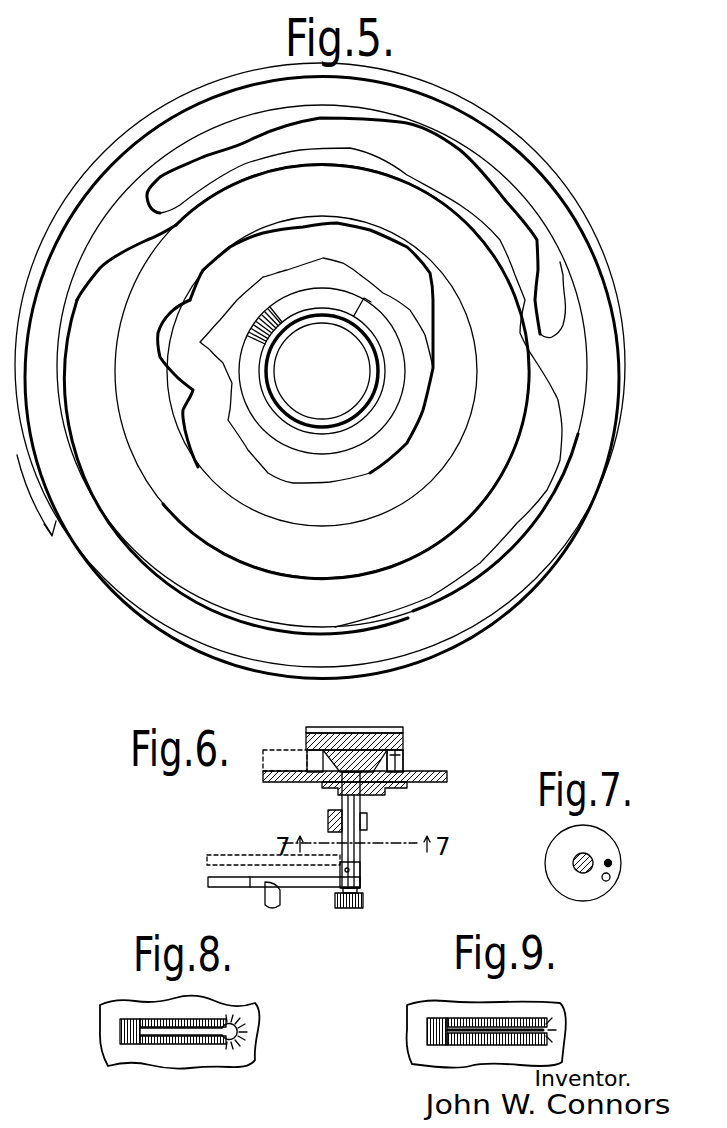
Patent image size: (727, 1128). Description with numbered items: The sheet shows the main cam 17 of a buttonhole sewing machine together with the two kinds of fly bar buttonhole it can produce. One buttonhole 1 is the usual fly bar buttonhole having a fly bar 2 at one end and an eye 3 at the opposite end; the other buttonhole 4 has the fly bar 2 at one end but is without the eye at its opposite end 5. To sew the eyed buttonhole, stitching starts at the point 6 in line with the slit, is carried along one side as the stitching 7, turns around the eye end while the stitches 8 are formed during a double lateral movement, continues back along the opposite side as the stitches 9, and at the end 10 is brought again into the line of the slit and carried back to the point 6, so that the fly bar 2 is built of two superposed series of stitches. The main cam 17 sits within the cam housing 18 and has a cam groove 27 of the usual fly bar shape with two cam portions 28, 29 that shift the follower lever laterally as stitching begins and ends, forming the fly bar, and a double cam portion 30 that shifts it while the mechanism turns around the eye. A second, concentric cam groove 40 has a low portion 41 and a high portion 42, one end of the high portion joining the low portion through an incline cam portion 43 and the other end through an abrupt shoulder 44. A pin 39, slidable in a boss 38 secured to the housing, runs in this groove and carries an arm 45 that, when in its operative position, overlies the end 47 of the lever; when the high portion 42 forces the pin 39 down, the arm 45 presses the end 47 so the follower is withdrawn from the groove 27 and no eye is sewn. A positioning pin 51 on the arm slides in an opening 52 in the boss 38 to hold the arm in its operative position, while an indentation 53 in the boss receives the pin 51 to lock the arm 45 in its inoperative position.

In FIG. 5, the main cam 17 is at (586, 386).
In FIG. 6, the main cam 17 is at (402, 760).
In FIG. 6, the cam housing 18 is at (447, 774).
In FIG. 5, the cam groove 27 is at (405, 477).
In FIG. 5, the cam portion 28 is at (288, 500).
In FIG. 5, the cam portion 29 is at (305, 240).
In FIG. 5, the double cam portion 30 is at (192, 377).
In FIG. 6, the boss 38 is at (328, 818).
In FIG. 7, the boss 38 is at (605, 843).
In FIG. 6, the pin 39 is at (347, 850).
In FIG. 7, the pin 39 is at (578, 868).
In FIG. 5, the cam groove 40 is at (390, 396).
In FIG. 6, the cam groove 40 is at (398, 763).
In FIG. 5, the low portion 41 is at (253, 375).
In FIG. 6, the low portion 41 is at (306, 740).
In FIG. 5, the high portion 42 is at (333, 292).
In FIG. 6, the high portion 42 is at (380, 771).
In FIG. 5, the incline cam portion 43 is at (258, 325).
In FIG. 6, the incline cam portion 43 is at (340, 770).
In FIG. 5, the abrupt shoulder 44 is at (371, 302).
In FIG. 6, the abrupt shoulder 44 is at (398, 760).
In FIG. 6, the arm 45 is at (240, 877).
In FIG. 6, the end of the lever 47 is at (262, 892).
In FIG. 6, the positioning pin 51 is at (363, 850).
In FIG. 7, the positioning pin 51 is at (612, 862).
In FIG. 6, the opening 52 is at (367, 822).
In FIG. 7, the indentation 53 is at (610, 880).
In FIG. 8, the fly bar buttonhole 1 is at (165, 1038).
In FIG. 8, the fly bar 2 is at (128, 1040).
In FIG. 9, the fly bar 2 is at (425, 1028).
In FIG. 8, the eye 3 is at (232, 1040).
In FIG. 9, the fly bar buttonhole 4 is at (497, 1040).
In FIG. 9, the end 5 is at (550, 1028).
In FIG. 8, the point 6 is at (122, 1033).
In FIG. 9, the point 6 is at (430, 1032).
In FIG. 8, the stitching 7 is at (182, 1040).
In FIG. 8, the stitches 8 is at (245, 1032).
In FIG. 8, the stitches 9 is at (170, 1025).
In FIG. 9, the stitches 9 is at (482, 1025).
In FIG. 8, the end 10 is at (140, 1025).